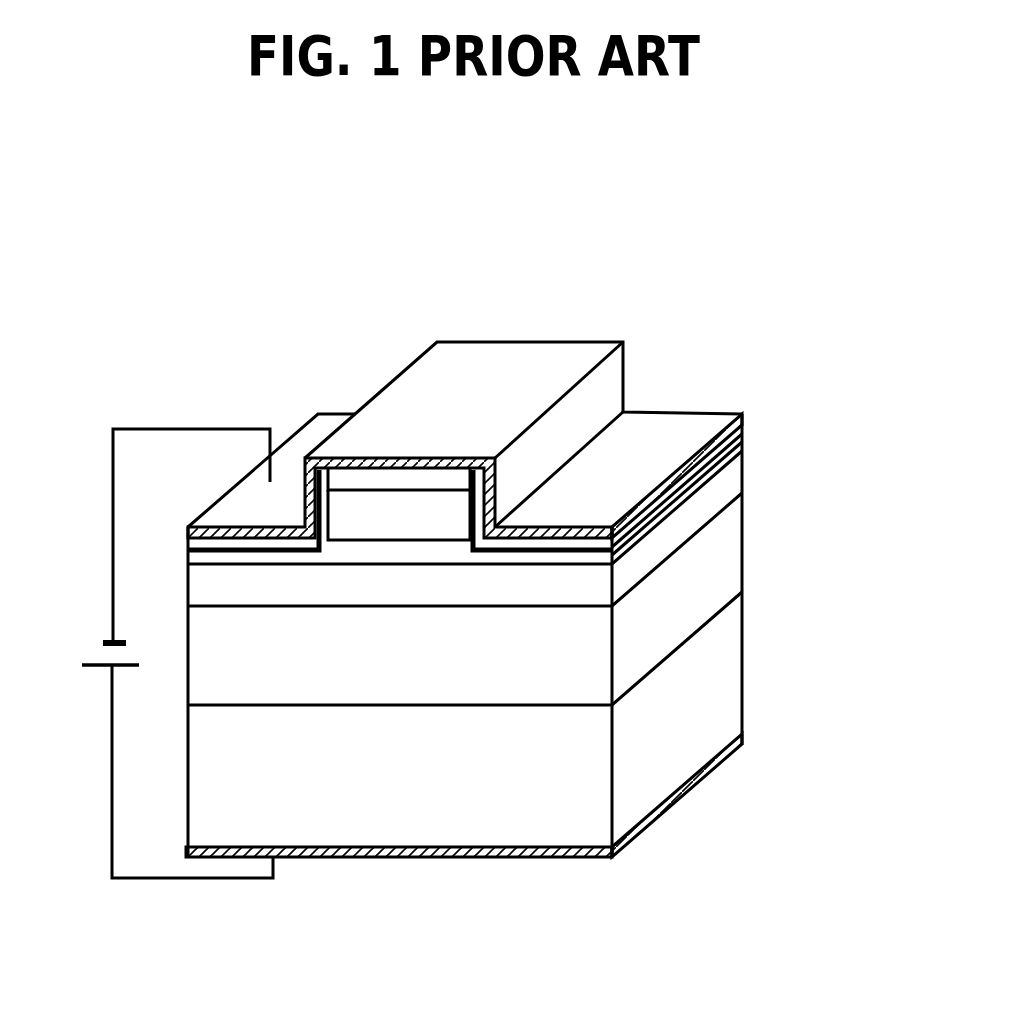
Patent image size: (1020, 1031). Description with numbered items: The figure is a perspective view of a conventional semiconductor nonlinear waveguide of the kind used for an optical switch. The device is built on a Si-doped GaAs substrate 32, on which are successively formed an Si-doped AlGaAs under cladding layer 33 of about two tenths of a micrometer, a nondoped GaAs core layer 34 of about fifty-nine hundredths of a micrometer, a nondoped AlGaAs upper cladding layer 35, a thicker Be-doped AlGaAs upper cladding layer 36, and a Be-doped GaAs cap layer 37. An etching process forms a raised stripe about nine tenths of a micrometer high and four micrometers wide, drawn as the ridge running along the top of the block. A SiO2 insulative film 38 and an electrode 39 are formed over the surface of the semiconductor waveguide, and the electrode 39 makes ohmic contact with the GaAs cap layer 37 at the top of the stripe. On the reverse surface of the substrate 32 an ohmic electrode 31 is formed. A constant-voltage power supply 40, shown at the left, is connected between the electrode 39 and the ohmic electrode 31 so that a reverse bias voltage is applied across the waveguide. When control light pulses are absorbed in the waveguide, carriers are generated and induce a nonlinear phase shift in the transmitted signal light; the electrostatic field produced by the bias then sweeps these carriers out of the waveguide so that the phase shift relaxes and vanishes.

The ohmic electrode 31 is at (730, 767).
The substrate 32 is at (717, 690).
The under cladding layer 33 is at (717, 583).
The core layer 34 is at (722, 494).
The upper cladding layer 35 is at (368, 562).
The upper cladding layer 36 is at (412, 517).
The cap layer 37 is at (443, 484).
The insulative film 38 is at (562, 553).
The electrode 39 is at (688, 437).
The constant-voltage power supply 40 is at (152, 653).